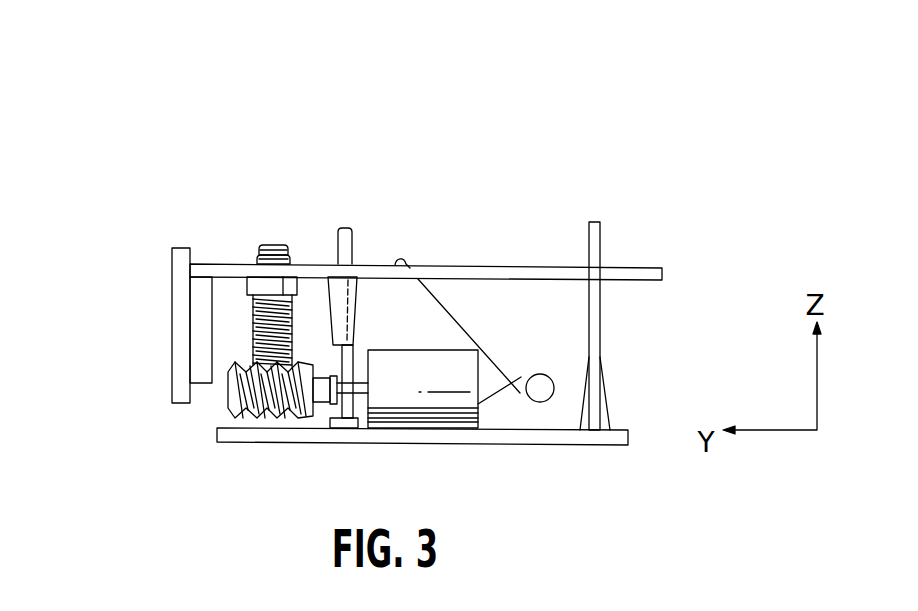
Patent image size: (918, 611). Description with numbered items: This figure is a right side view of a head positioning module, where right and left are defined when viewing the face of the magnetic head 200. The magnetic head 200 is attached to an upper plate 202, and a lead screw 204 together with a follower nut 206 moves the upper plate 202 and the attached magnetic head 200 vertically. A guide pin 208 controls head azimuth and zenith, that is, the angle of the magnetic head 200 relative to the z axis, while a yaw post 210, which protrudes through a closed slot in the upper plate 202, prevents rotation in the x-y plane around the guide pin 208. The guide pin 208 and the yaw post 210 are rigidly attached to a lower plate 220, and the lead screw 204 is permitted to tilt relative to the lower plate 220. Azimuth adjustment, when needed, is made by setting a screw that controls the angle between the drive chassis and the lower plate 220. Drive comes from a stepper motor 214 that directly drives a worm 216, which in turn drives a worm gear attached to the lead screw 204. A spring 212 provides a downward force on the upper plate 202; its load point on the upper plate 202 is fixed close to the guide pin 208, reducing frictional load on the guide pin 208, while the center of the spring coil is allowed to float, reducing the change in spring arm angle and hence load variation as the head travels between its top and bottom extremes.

The magnetic head 200 is at (172, 311).
The upper plate 202 is at (455, 265).
The lead screw 204 is at (273, 246).
The follower nut 206 is at (247, 288).
The guide pin 208 is at (342, 227).
The yaw post 210 is at (594, 222).
The spring 212 is at (464, 325).
The stepper motor 214 is at (419, 418).
The worm 216 is at (228, 395).
The lower plate 220 is at (552, 445).